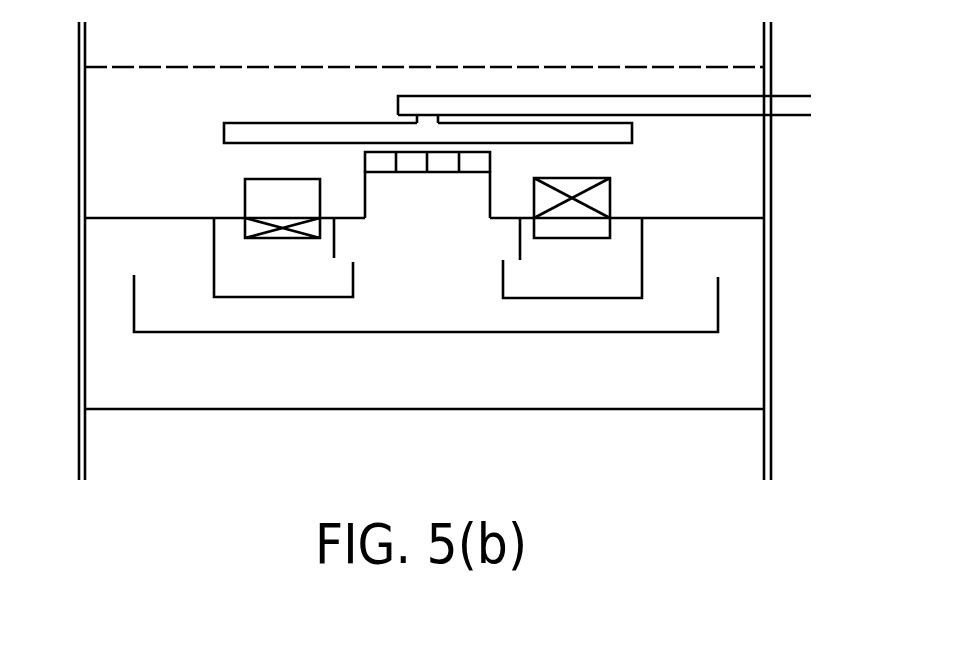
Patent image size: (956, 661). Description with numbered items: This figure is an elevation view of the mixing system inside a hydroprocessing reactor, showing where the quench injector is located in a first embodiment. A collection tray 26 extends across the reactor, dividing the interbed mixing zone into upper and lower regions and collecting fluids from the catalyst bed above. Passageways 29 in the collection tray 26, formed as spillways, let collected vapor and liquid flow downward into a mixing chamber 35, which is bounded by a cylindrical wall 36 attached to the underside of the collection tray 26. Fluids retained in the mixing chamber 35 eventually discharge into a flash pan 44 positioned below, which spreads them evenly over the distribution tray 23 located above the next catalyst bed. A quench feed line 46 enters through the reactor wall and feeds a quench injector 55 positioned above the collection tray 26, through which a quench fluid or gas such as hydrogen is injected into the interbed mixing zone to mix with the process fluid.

The distribution tray 23 is at (652, 409).
The collection tray 26 is at (167, 218).
The passageways 29 is at (584, 178).
The mixing chamber 35 is at (282, 237).
The cylindrical wall 36 is at (214, 268).
The flash pan 44 is at (636, 332).
The quench feed line 46 is at (788, 96).
The quench injector 55 is at (622, 148).